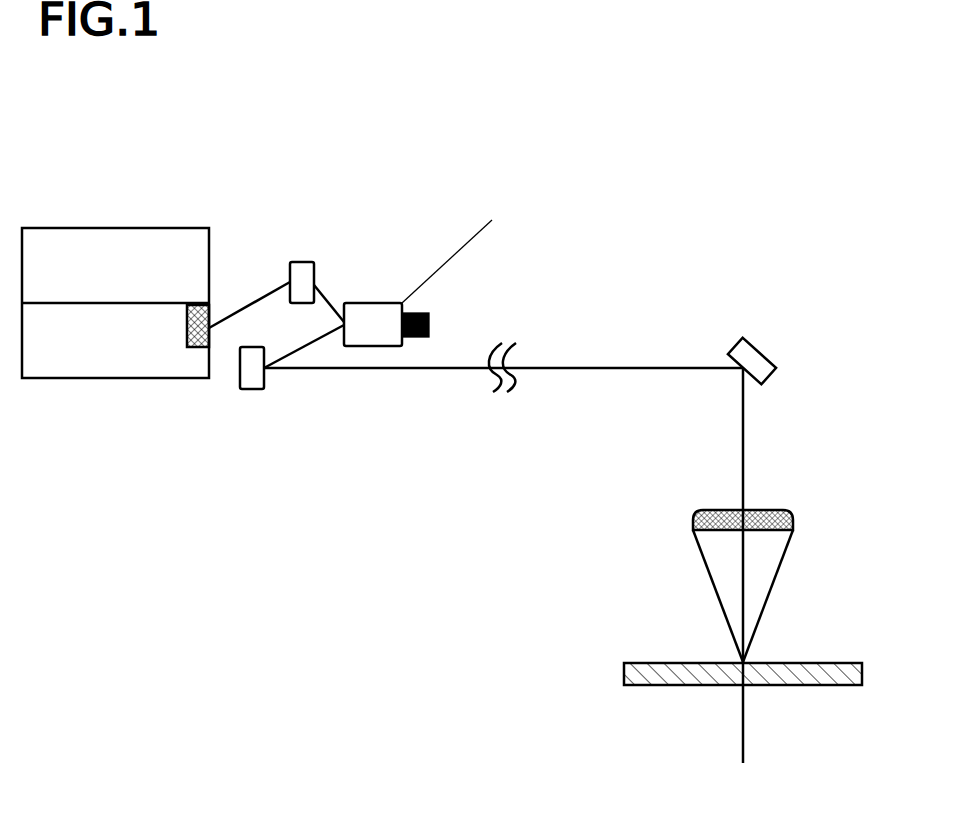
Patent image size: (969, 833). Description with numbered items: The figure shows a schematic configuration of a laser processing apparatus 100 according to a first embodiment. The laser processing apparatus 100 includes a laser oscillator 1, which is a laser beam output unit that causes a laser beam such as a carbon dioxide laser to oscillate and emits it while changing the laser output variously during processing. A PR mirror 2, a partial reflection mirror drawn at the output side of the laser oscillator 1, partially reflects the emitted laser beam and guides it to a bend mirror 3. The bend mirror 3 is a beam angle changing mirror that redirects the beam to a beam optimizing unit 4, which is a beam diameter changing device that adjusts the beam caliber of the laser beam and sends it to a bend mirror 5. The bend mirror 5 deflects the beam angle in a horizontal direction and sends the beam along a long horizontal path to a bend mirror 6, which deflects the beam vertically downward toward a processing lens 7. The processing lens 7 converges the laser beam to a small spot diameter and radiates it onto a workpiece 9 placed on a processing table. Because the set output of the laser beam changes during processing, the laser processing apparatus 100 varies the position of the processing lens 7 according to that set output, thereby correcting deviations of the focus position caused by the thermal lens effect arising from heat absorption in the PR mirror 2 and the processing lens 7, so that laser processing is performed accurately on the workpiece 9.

The laser processing apparatus 100 is at (202, 136).
The laser oscillator 1 is at (135, 240).
The PR mirror 2 is at (211, 318).
The bend mirror 3 is at (302, 262).
The beam optimizing unit 4 is at (376, 303).
The bend mirror 5 is at (265, 389).
The bend mirror 6 is at (758, 352).
The processing lens 7 is at (770, 512).
The workpiece 9 is at (836, 663).